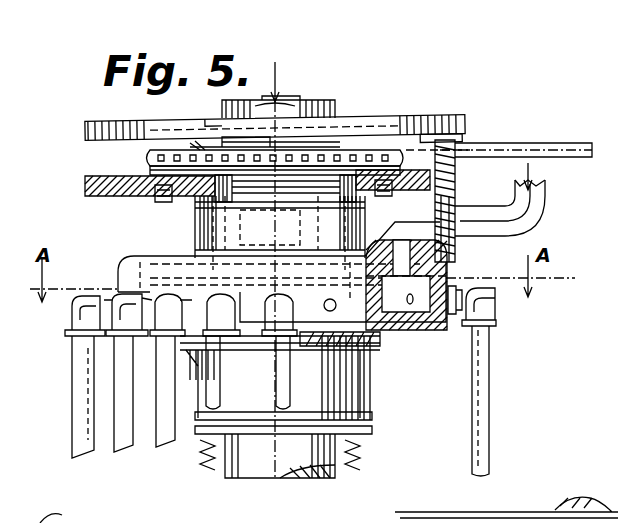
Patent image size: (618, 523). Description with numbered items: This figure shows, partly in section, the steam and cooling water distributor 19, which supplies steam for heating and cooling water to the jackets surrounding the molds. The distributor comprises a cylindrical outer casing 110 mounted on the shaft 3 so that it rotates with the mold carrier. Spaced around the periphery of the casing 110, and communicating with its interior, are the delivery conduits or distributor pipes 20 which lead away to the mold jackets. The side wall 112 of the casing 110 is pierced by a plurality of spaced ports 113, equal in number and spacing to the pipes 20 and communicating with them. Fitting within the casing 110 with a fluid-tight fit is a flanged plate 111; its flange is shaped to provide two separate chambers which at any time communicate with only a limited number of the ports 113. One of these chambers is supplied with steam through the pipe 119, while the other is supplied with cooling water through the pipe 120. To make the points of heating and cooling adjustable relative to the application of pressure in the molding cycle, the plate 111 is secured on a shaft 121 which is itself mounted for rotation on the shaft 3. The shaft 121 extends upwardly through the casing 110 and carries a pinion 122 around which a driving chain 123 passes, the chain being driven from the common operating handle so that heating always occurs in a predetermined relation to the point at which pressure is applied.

The shaft 3 is at (262, 100).
The steam and cooling water distributor 19 is at (120, 266).
The delivery conduits 20 is at (204, 410).
The cylindrical outer casing 110 is at (425, 241).
The flanged plate 111 is at (420, 332).
The side wall 112 is at (450, 272).
The ports 113 is at (337, 310).
The pipe 119 is at (548, 204).
The pipe 120 is at (205, 228).
The shaft 121 is at (170, 199).
The pinion 122 is at (378, 150).
The driving chain 123 is at (512, 143).